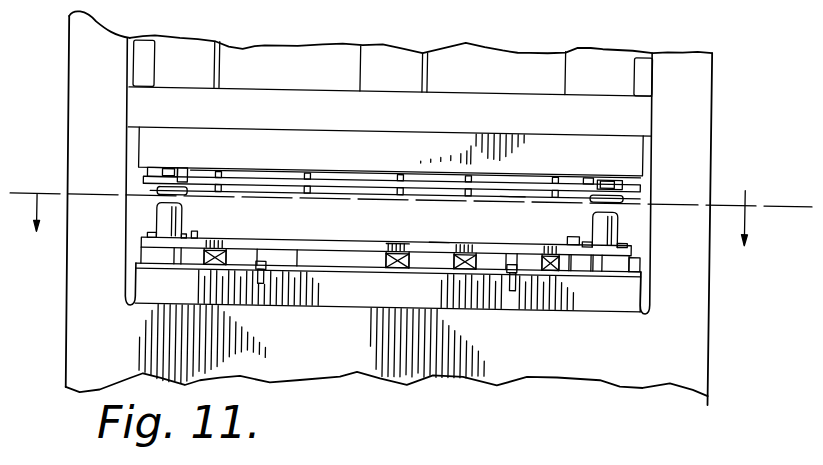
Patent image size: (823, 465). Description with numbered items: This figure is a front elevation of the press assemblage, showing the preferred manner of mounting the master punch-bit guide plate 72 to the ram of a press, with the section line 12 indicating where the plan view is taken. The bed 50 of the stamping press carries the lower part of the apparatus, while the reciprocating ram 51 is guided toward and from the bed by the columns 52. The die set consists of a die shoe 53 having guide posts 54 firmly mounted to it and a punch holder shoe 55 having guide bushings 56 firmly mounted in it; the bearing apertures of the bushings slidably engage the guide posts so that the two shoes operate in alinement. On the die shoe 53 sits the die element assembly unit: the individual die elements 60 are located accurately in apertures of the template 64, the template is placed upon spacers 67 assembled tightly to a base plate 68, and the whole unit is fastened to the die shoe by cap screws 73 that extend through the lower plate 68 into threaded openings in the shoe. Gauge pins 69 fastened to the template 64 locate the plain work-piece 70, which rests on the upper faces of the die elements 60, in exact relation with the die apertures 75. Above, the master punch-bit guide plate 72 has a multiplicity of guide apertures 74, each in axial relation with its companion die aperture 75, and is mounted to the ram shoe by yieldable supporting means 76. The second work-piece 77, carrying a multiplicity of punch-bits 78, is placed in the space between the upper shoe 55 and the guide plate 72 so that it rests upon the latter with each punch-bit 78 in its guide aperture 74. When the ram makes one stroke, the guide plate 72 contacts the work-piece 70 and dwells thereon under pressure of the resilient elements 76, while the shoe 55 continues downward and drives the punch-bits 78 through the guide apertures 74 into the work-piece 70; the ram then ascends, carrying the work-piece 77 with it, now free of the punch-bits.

The section line 12 is at (410, 208).
The bed 50 is at (387, 353).
The reciprocating ram 51 is at (420, 86).
The columns 52 is at (389, 208).
The die shoe 53 is at (388, 287).
The guide posts 54 is at (156, 212).
The punch holder shoe 55 is at (391, 151).
The guide bushings 56 is at (147, 172).
The die element 60 is at (409, 262).
The template 64 is at (633, 242).
The spacers 67 is at (633, 259).
The base plate 68 is at (618, 270).
The gauge pins 69 is at (198, 236).
The work-piece 70 is at (438, 236).
The master punch-bit guide plate 72 is at (512, 189).
The cap screws 73 is at (267, 260).
The guide apertures 74 is at (400, 186).
The die aperture 75 is at (398, 244).
The yieldable supporting means 76 is at (167, 172).
The work-piece 77 is at (290, 168).
The punch-bits 78 is at (401, 170).